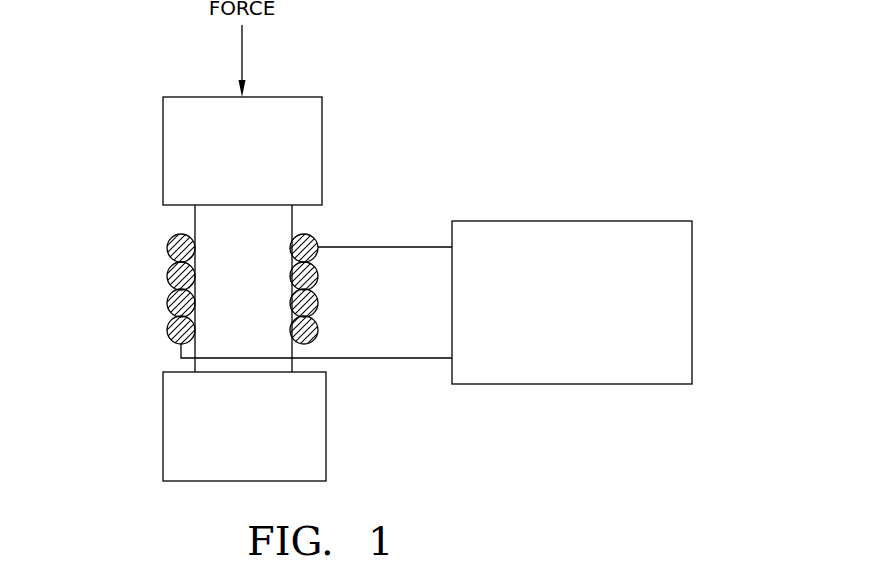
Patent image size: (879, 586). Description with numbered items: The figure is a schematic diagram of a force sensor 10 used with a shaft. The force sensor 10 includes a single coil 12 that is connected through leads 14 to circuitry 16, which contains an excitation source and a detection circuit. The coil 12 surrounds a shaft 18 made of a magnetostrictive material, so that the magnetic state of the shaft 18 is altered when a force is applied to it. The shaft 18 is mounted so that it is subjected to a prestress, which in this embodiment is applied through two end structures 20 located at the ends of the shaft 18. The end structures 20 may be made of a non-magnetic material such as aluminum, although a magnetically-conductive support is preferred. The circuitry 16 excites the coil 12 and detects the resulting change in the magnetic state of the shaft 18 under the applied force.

The force sensor 10 is at (535, 122).
The coil 12 is at (167, 242).
The leads 14 is at (396, 247).
The circuitry 16 is at (648, 221).
The shaft 18 is at (212, 226).
The end structures 20 is at (315, 160).